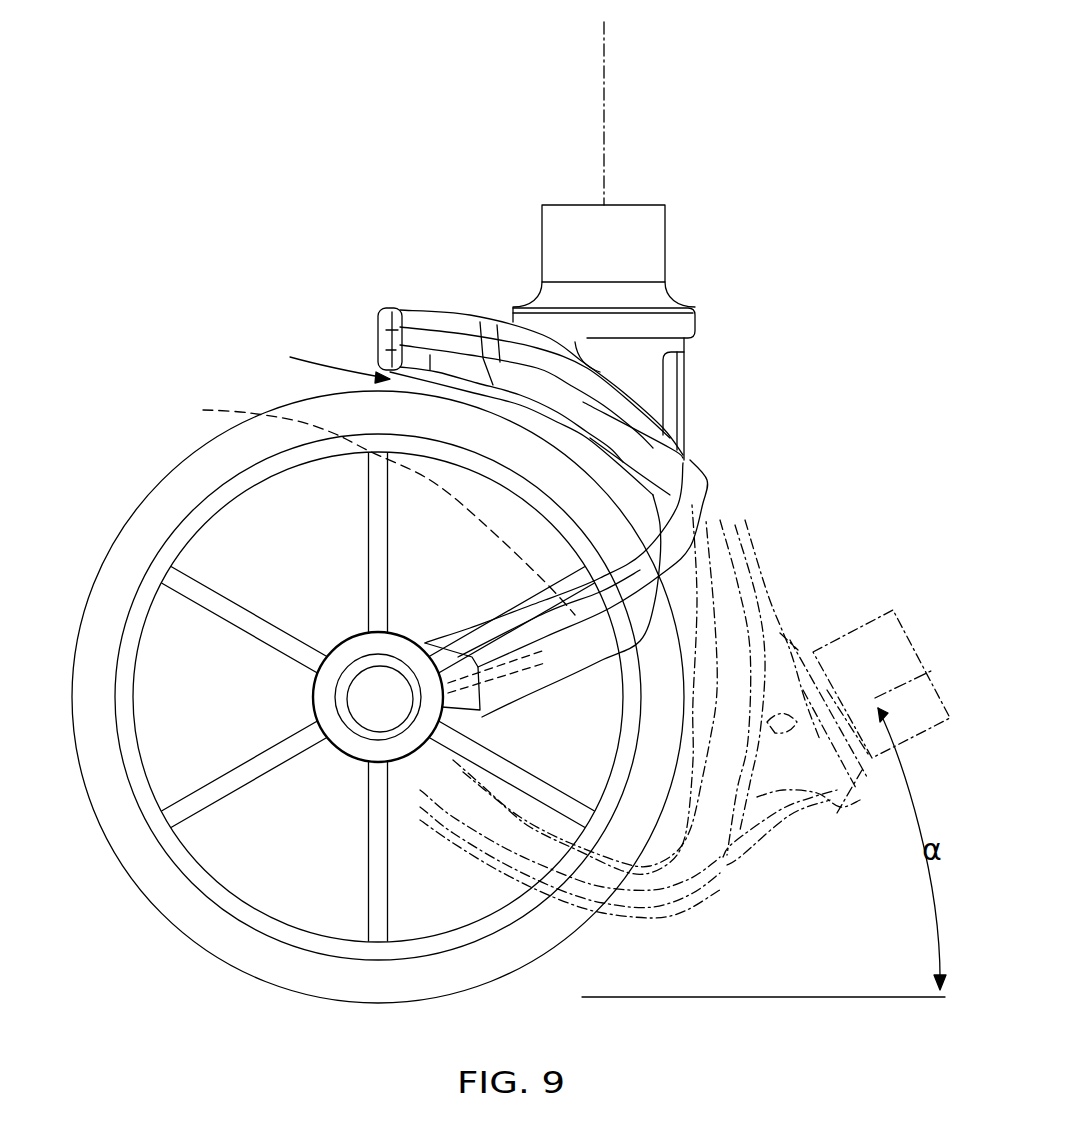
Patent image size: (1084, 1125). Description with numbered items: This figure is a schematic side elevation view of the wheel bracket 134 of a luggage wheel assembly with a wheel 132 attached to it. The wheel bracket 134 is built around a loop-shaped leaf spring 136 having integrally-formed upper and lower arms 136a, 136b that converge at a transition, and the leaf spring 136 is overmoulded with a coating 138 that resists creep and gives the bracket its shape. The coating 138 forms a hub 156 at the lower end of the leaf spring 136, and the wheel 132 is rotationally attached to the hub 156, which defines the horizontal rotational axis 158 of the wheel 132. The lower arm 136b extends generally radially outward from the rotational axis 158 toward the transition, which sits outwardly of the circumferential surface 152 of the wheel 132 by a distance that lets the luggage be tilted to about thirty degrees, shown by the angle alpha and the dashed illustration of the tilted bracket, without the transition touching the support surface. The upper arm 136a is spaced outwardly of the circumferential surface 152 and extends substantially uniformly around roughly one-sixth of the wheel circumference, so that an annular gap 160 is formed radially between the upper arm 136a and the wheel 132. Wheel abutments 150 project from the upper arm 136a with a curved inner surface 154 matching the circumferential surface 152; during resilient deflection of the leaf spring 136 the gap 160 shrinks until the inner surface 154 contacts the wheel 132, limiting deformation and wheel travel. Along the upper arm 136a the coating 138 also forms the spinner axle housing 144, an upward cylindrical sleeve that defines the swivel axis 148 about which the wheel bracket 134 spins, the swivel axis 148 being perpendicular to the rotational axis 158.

The wheel 132 is at (195, 921).
The wheel bracket 134 is at (697, 322).
The leaf spring 136 is at (697, 463).
The upper arm 136a is at (493, 330).
The lower arm 136b is at (361, 504).
The coating 138 is at (680, 600).
The spinner axle housing 144 is at (668, 262).
The swivel axis 148 is at (606, 48).
The wheel abutment 150 is at (407, 311).
The circumferential surface 152 is at (166, 478).
The curved inner surface 154 is at (393, 325).
The hub 156 is at (323, 700).
The rotational axis 158 is at (378, 695).
The annular gap 160 is at (316, 359).